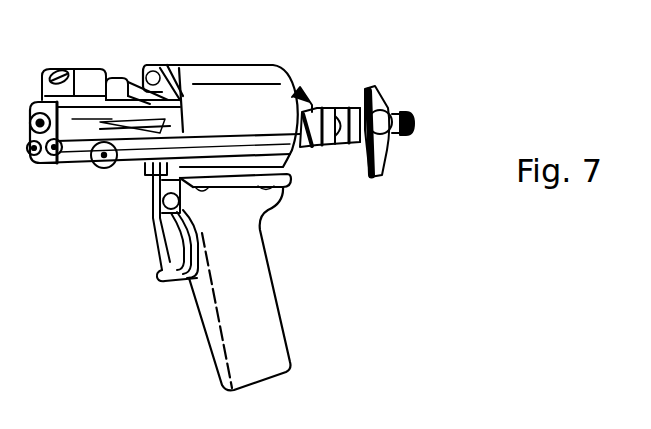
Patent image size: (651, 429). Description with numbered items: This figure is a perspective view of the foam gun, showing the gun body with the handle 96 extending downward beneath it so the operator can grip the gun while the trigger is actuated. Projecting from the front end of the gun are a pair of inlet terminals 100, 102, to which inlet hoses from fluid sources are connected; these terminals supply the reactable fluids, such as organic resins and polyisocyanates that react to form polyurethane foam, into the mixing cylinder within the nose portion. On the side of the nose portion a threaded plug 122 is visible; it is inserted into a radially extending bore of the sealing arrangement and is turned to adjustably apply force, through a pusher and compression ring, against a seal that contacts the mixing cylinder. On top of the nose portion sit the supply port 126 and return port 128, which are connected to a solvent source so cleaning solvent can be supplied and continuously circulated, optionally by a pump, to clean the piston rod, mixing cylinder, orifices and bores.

The handle 96 is at (256, 296).
The inlet terminal 100 is at (341, 106).
The inlet terminal 102 is at (402, 110).
The threaded plug 122 is at (103, 169).
The supply port 126 is at (88, 69).
The return port 128 is at (102, 70).